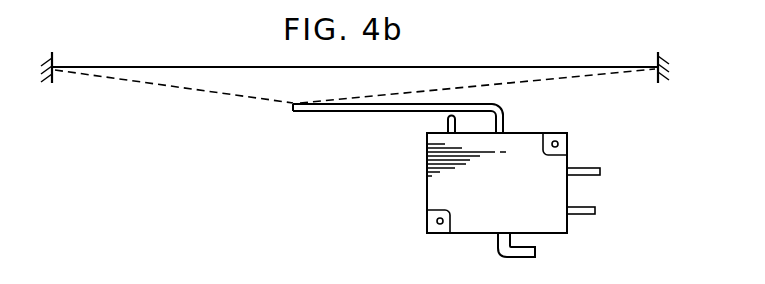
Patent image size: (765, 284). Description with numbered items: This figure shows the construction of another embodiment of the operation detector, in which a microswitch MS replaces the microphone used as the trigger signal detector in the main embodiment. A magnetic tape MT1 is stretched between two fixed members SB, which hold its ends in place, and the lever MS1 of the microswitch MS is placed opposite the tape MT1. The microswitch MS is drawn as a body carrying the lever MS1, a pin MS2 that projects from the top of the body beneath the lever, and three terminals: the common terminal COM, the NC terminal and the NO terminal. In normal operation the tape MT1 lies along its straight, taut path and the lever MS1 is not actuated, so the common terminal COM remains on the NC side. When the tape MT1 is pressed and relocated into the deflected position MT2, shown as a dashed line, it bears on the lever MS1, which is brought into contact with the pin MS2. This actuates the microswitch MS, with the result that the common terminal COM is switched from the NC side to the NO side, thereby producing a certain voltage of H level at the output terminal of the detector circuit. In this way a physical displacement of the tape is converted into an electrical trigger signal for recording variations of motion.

The fixed member SB is at (43, 84).
The tape MT1 is at (146, 69).
The relocated position of the tape MT2 is at (213, 92).
The lever MS1 is at (320, 112).
The pin MS2 is at (447, 122).
The microswitch MS is at (460, 227).
The NC terminal NC is at (566, 173).
The NO terminal NO is at (564, 210).
The common terminal COM is at (506, 233).